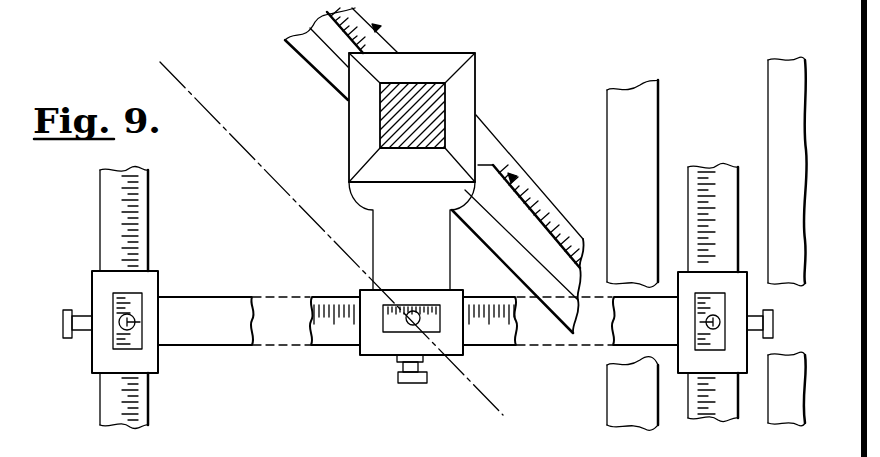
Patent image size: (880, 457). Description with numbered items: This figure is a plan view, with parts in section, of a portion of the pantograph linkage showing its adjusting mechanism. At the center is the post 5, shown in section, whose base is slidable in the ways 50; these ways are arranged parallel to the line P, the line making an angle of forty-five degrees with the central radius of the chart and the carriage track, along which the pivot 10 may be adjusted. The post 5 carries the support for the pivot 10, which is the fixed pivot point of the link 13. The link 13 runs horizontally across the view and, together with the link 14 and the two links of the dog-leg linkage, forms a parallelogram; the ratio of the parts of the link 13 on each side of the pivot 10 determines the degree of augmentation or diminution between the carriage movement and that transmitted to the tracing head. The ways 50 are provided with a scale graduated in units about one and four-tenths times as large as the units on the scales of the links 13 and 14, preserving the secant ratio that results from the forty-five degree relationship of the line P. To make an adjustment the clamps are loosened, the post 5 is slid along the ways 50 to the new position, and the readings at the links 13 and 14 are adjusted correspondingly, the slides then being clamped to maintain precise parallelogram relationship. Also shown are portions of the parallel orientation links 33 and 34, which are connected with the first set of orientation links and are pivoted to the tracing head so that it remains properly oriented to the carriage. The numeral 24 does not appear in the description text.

The post 5 is at (432, 107).
The pivot point 10 is at (407, 327).
The link 13 is at (418, 321).
The link 14 is at (118, 217).
The base member 24 is at (572, 447).
The parallel orientation link 33 is at (623, 127).
The parallel orientation link 34 is at (777, 122).
The ways 50 is at (315, 53).
The line P is at (270, 213).